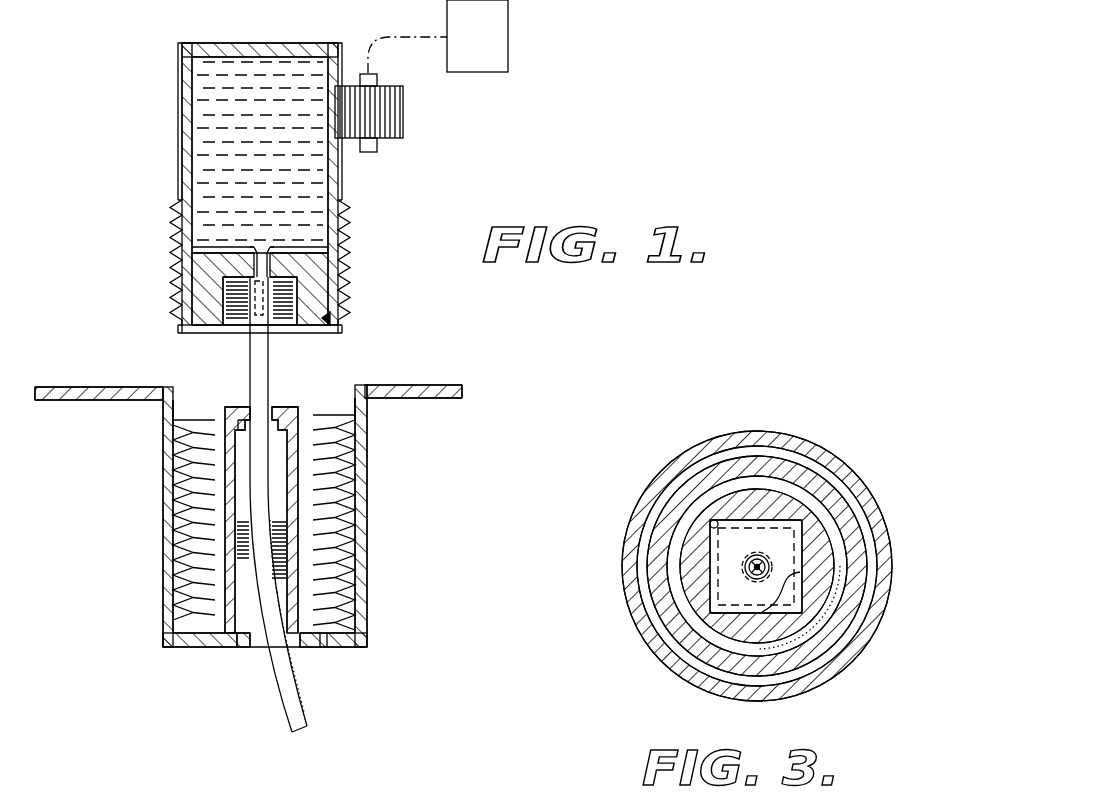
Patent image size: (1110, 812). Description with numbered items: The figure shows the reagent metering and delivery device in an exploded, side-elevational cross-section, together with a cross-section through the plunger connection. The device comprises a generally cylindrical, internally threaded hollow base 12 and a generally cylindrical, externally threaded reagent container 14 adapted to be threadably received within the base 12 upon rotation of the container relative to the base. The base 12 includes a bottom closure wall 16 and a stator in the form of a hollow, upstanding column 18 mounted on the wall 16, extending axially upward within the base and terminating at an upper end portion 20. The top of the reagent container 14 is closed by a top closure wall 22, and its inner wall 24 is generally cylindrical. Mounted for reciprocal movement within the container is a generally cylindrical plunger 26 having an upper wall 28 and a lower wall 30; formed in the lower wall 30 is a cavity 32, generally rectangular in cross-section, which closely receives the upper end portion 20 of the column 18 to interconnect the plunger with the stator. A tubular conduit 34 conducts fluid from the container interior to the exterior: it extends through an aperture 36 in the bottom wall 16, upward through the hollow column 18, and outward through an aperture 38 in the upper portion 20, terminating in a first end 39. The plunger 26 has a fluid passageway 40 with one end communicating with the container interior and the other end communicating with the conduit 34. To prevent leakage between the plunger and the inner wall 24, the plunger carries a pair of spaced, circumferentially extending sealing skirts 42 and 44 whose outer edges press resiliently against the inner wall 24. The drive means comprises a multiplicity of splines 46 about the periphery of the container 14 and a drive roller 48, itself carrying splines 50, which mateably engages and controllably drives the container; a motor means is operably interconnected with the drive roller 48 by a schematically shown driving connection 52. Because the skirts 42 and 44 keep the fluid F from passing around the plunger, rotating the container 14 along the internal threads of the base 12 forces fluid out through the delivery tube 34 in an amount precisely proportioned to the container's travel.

In FIG. 1, the hollow base 12 is at (363, 547).
In FIG. 3, the hollow base 12 is at (633, 628).
In FIG. 1, the reagent container 14 is at (174, 118).
In FIG. 3, the reagent container 14 is at (662, 598).
In FIG. 1, the bottom closure wall 16 is at (341, 648).
In FIG. 1, the upstanding column 18 is at (298, 468).
In FIG. 3, the upstanding column 18 is at (775, 535).
In FIG. 1, the upper end portion 20 is at (287, 407).
In FIG. 1, the top closure wall 22 is at (295, 43).
In FIG. 3, the top closure wall 22 is at (755, 478).
In FIG. 1, the inner wall 24 is at (188, 167).
In FIG. 1, the plunger 26 is at (318, 281).
In FIG. 3, the plunger 26 is at (712, 618).
In FIG. 1, the upper wall 28 is at (300, 246).
In FIG. 1, the lower wall 30 is at (305, 330).
In FIG. 1, the cavity 32 is at (205, 285).
In FIG. 3, the cavity 32 is at (712, 522).
In FIG. 1, the tubular conduit 34 is at (268, 694).
In FIG. 3, the tubular conduit 34 is at (745, 557).
In FIG. 1, the aperture 36 is at (245, 640).
In FIG. 1, the aperture 38 is at (245, 405).
In FIG. 1, the first end 39 is at (270, 250).
In FIG. 1, the fluid passageway 40 is at (262, 247).
In FIG. 3, the fluid passageway 40 is at (748, 566).
In FIG. 1, the sealing skirt 42 is at (322, 250).
In FIG. 1, the sealing skirt 44 is at (332, 319).
In FIG. 1, the splines 46 is at (178, 78).
In FIG. 1, the drive roller 48 is at (403, 98).
In FIG. 1, the splines 50 is at (398, 125).
In FIG. 1, the driving connection 52 is at (386, 38).
In FIG. 1, the fluid F is at (228, 57).